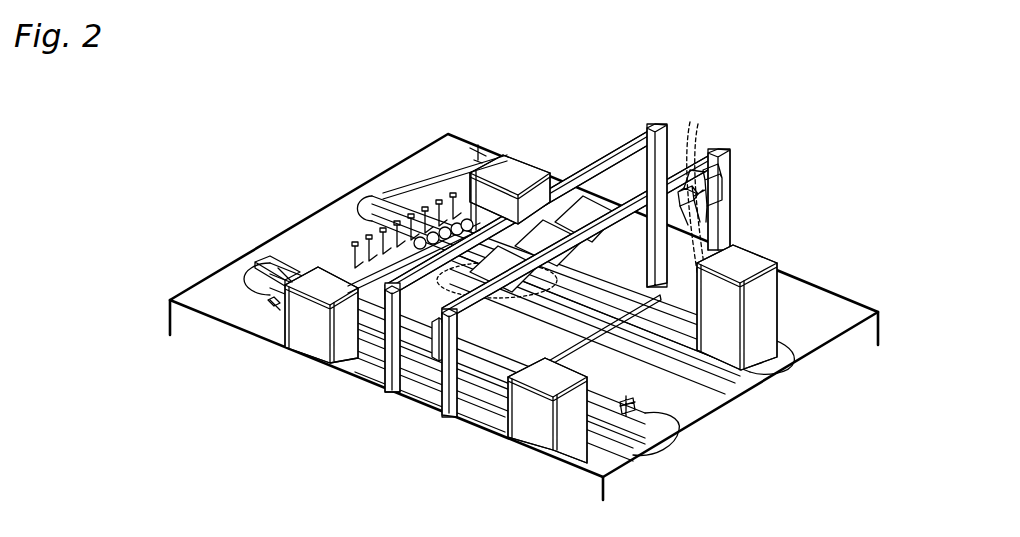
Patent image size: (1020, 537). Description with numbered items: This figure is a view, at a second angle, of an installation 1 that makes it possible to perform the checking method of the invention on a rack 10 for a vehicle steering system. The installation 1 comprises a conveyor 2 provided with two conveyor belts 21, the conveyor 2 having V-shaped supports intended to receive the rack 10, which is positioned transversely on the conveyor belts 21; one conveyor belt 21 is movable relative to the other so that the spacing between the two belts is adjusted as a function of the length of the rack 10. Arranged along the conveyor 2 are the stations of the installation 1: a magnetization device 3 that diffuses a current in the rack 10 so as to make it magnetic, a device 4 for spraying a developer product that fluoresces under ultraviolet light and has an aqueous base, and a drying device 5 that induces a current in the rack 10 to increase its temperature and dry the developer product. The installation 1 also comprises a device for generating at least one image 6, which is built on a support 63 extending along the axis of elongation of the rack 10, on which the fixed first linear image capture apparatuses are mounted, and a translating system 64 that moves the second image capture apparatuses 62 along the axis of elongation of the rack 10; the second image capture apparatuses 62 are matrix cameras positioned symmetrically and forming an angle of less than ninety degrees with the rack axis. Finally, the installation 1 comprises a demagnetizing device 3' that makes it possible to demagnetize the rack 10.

The installation 1 is at (816, 194).
The conveyor 2 is at (563, 342).
The conveyor belts 21 is at (786, 362).
The magnetization device 3 is at (523, 170).
The demagnetizing device 3' is at (655, 366).
The device for spraying a developer product 4 is at (417, 192).
The drying device 5 is at (273, 326).
The device for generating at least one image 6 is at (587, 254).
The rack 10 is at (518, 356).
The second image capture apparatuses 62 is at (704, 203).
The support 63 is at (652, 140).
The translating system 64 is at (680, 183).